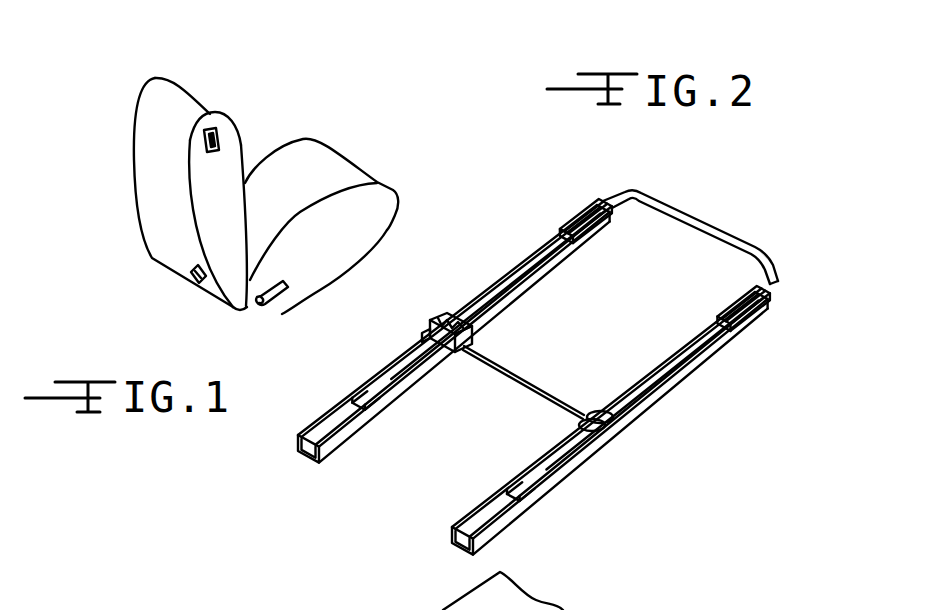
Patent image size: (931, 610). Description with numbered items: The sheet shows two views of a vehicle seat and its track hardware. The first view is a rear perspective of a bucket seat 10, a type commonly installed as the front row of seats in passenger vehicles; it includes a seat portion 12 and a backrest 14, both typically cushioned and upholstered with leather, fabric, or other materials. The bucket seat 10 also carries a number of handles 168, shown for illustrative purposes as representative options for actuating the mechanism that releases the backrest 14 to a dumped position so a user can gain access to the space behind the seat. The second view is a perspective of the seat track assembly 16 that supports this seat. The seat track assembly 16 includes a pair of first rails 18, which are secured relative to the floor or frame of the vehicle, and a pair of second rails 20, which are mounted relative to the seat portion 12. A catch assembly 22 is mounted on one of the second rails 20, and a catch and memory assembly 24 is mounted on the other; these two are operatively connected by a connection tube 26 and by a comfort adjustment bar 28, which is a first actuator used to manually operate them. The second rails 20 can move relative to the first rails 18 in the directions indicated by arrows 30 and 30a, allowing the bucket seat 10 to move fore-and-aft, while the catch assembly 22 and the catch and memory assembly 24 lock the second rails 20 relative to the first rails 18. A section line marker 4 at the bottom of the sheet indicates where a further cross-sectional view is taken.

In FIG. 1, the bucket seat 10 is at (296, 76).
In FIG. 1, the seat portion 12 is at (365, 222).
In FIG. 1, the backrest 14 is at (160, 181).
In FIG. 2, the seat track assembly 16 is at (694, 193).
In FIG. 2, the first rails 18 is at (333, 477).
In FIG. 2, the second rails 20 is at (383, 375).
In FIG. 2, the catch assembly 22 is at (598, 472).
In FIG. 2, the catch and memory assembly 24 is at (445, 310).
In FIG. 2, the connection tube 26 is at (521, 381).
In FIG. 2, the comfort adjustment bar 28 is at (781, 276).
In FIG. 2, the arrow 30 is at (766, 341).
In FIG. 2, the arrow 30a is at (697, 405).
In FIG. 1, the handles 168 is at (213, 130).
In FIG. 2, the section line 4 is at (507, 609).